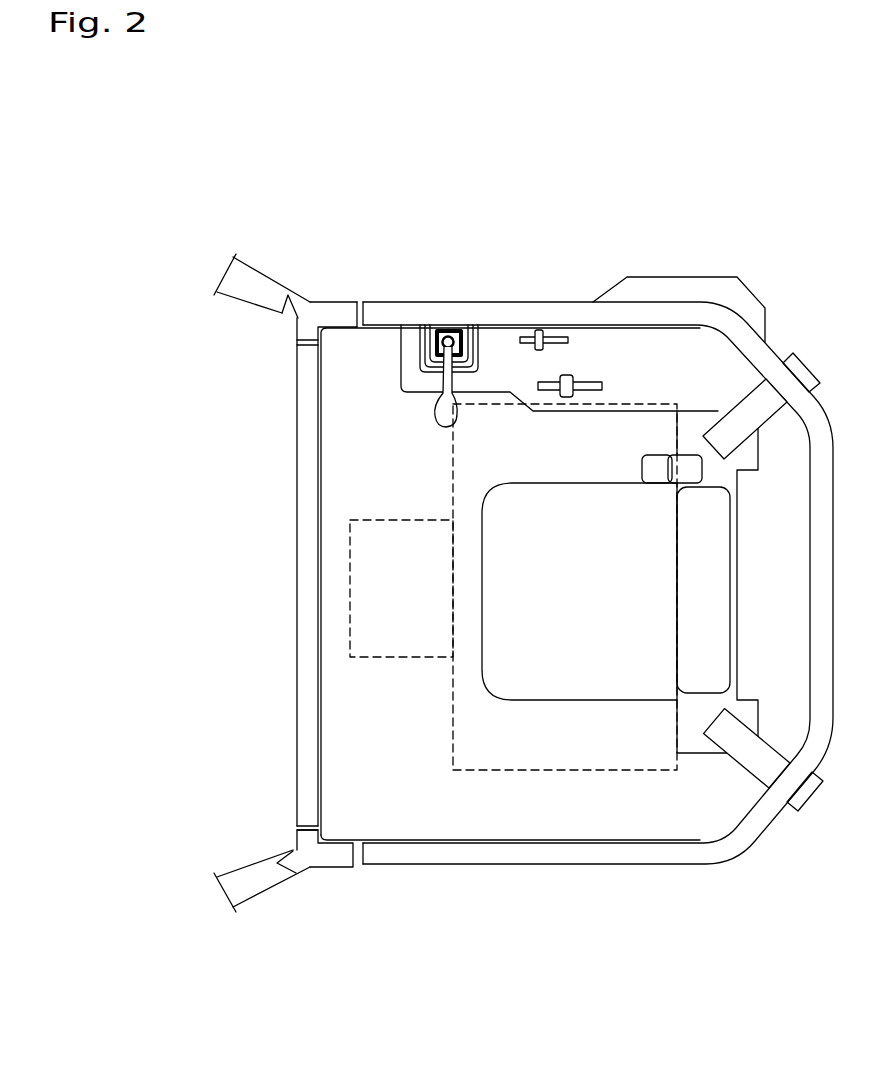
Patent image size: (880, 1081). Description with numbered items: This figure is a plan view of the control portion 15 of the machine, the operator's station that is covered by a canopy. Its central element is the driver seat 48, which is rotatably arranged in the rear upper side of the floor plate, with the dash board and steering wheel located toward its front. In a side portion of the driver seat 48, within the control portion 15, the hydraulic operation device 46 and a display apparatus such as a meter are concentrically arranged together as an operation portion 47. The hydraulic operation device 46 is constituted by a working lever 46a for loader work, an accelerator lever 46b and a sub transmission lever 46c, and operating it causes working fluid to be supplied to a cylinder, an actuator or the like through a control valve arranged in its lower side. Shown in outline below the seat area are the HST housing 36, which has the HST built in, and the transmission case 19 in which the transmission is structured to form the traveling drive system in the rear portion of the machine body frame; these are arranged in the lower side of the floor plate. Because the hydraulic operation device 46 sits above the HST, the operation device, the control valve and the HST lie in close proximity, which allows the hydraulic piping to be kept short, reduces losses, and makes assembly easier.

The control portion 15 is at (354, 190).
The transmission case 19 is at (452, 754).
The HST housing 36 is at (380, 658).
The hydraulic operation device 46 is at (496, 346).
The working lever 46a is at (434, 407).
The accelerator lever 46b is at (539, 330).
The sub transmission lever 46c is at (573, 377).
The operation portion 47 is at (400, 366).
The driver seat 48 is at (610, 483).